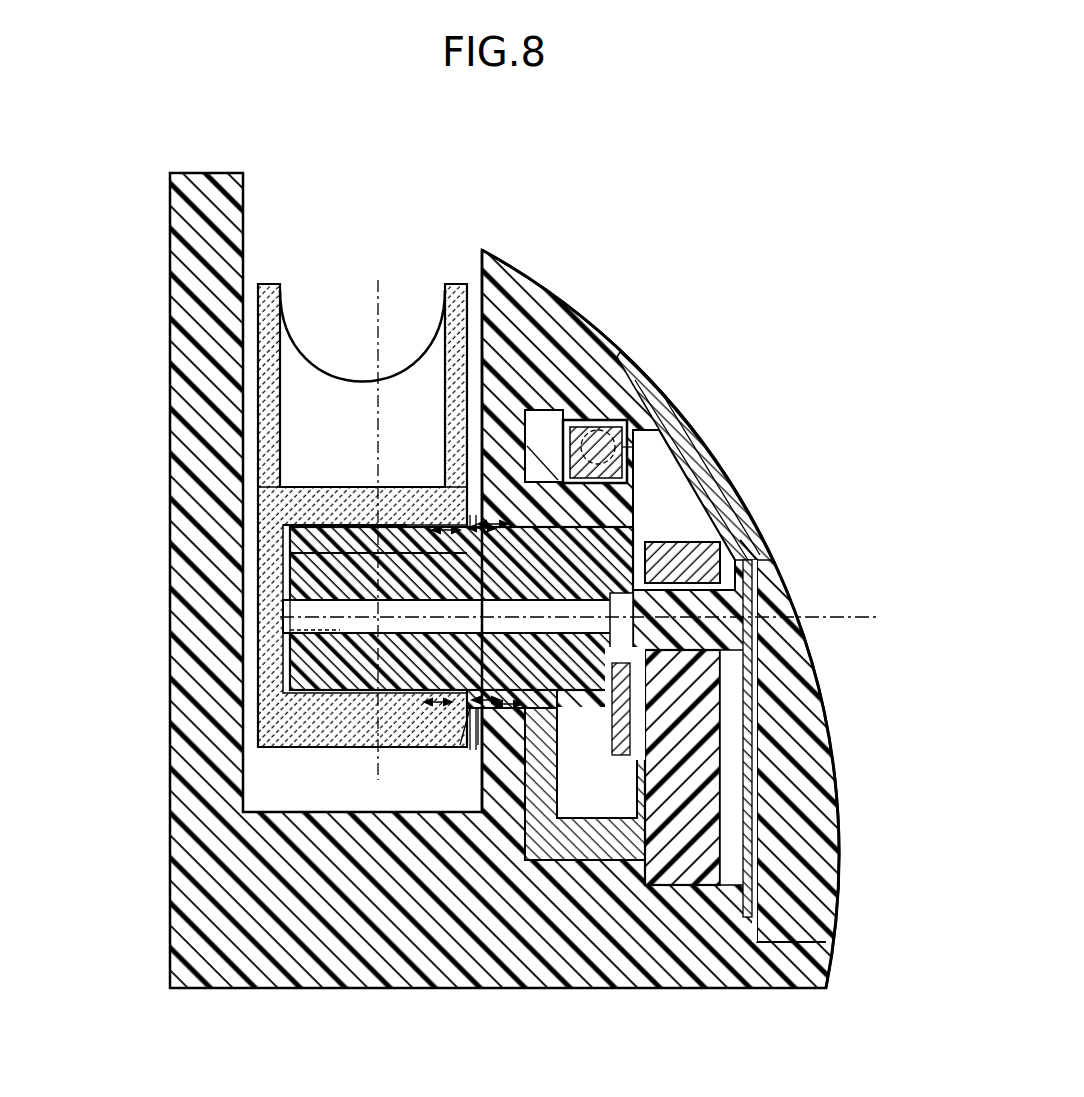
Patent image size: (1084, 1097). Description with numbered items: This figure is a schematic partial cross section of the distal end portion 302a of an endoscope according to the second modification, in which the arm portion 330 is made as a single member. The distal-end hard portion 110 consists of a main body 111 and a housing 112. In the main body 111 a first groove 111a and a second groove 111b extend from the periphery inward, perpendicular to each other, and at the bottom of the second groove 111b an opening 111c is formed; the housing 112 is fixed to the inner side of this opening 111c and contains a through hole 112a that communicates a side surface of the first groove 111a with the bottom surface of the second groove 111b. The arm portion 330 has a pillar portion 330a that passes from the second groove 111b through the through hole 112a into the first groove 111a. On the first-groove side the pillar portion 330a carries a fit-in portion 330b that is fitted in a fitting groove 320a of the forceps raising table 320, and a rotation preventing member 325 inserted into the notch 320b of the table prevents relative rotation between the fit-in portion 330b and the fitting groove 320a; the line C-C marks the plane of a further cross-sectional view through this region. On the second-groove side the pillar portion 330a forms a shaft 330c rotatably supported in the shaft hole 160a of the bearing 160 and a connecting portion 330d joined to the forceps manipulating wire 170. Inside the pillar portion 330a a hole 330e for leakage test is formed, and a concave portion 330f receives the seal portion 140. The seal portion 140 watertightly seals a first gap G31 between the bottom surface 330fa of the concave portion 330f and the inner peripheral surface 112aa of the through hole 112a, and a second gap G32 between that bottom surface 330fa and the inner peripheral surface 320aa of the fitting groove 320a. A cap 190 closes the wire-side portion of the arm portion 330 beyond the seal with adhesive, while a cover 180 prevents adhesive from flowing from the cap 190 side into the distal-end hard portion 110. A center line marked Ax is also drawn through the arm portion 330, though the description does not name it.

The distal-end hard portion 110 is at (903, 338).
The main body 111 is at (582, 306).
The first groove 111a is at (345, 282).
The second groove 111b is at (652, 525).
The opening 111c is at (546, 428).
The housing 112 is at (628, 362).
The through hole 112a is at (592, 538).
The inner peripheral surface 112aa is at (480, 522).
The seal portion 140 is at (508, 556).
The bearing 160 is at (728, 676).
The shaft hole 160a is at (700, 644).
The forceps manipulating wire 170 is at (612, 445).
The cover 180 is at (755, 548).
The cap 190 is at (688, 396).
The distal end portion 302a is at (606, 188).
The forceps raising table 320 is at (264, 282).
The fitting groove 320a is at (420, 525).
The inner peripheral surface 320aa is at (437, 522).
The notch 320b is at (350, 540).
The rotation preventing member 325 is at (304, 526).
The arm portion 330 is at (288, 550).
The pillar portion 330a is at (352, 530).
The fit-in portion 330b is at (338, 548).
The shaft 330c is at (726, 568).
The connecting portion 330d is at (632, 448).
The hole for leakage test 330e is at (318, 628).
The concave portion 330f is at (442, 520).
The bottom surface 330fa is at (462, 745).
The first gap G31 is at (492, 522).
The second gap G32 is at (428, 698).
The line C- C is at (384, 270).
The axis Ax is at (268, 620).